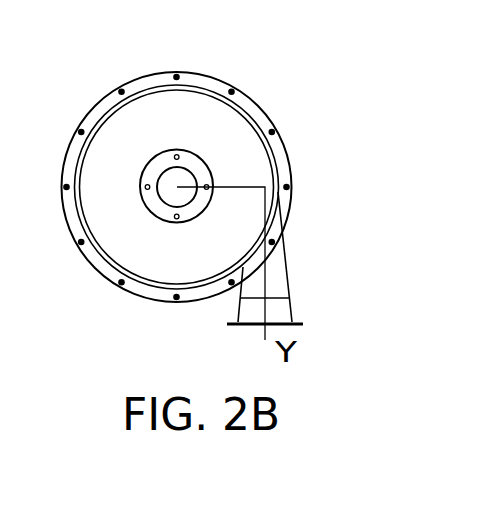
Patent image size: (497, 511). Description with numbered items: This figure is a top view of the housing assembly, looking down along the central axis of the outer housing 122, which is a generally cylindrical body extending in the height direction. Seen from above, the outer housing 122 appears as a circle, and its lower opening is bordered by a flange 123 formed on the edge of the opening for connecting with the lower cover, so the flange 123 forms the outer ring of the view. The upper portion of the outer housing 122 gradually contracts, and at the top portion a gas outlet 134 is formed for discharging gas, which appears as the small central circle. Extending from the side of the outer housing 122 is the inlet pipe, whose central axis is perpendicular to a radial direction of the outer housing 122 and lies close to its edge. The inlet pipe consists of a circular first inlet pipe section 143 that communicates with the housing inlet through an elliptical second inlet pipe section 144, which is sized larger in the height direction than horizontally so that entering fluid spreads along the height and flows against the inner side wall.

The outer housing 122 is at (263, 123).
The flange 123 is at (248, 106).
The gas outlet 134 is at (178, 187).
The first inlet pipe section 143 is at (288, 312).
The second inlet pipe section 144 is at (284, 258).